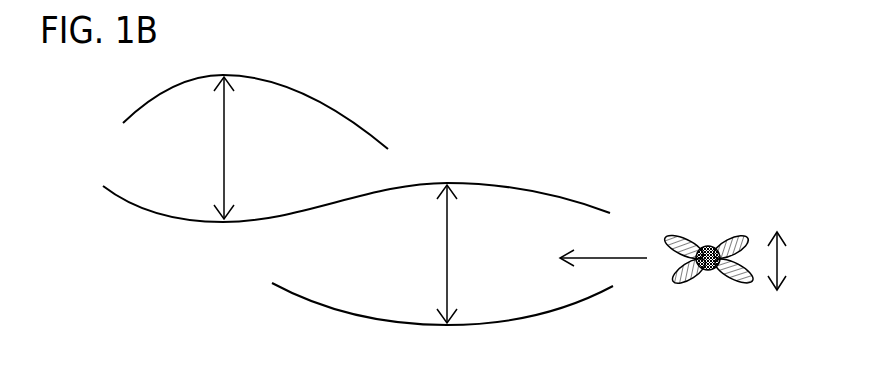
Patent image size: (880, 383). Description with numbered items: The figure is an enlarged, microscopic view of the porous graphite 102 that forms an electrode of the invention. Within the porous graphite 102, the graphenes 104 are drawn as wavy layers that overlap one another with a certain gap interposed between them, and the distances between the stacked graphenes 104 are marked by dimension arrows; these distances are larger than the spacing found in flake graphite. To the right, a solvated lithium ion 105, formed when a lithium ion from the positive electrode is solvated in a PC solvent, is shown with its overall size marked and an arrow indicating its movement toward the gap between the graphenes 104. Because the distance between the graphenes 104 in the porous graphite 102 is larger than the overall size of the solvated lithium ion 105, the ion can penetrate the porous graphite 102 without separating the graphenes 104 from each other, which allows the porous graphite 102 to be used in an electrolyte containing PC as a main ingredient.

The porous graphite 102 is at (578, 125).
The graphenes 104 is at (277, 292).
The solvated lithium ion 105 is at (745, 232).